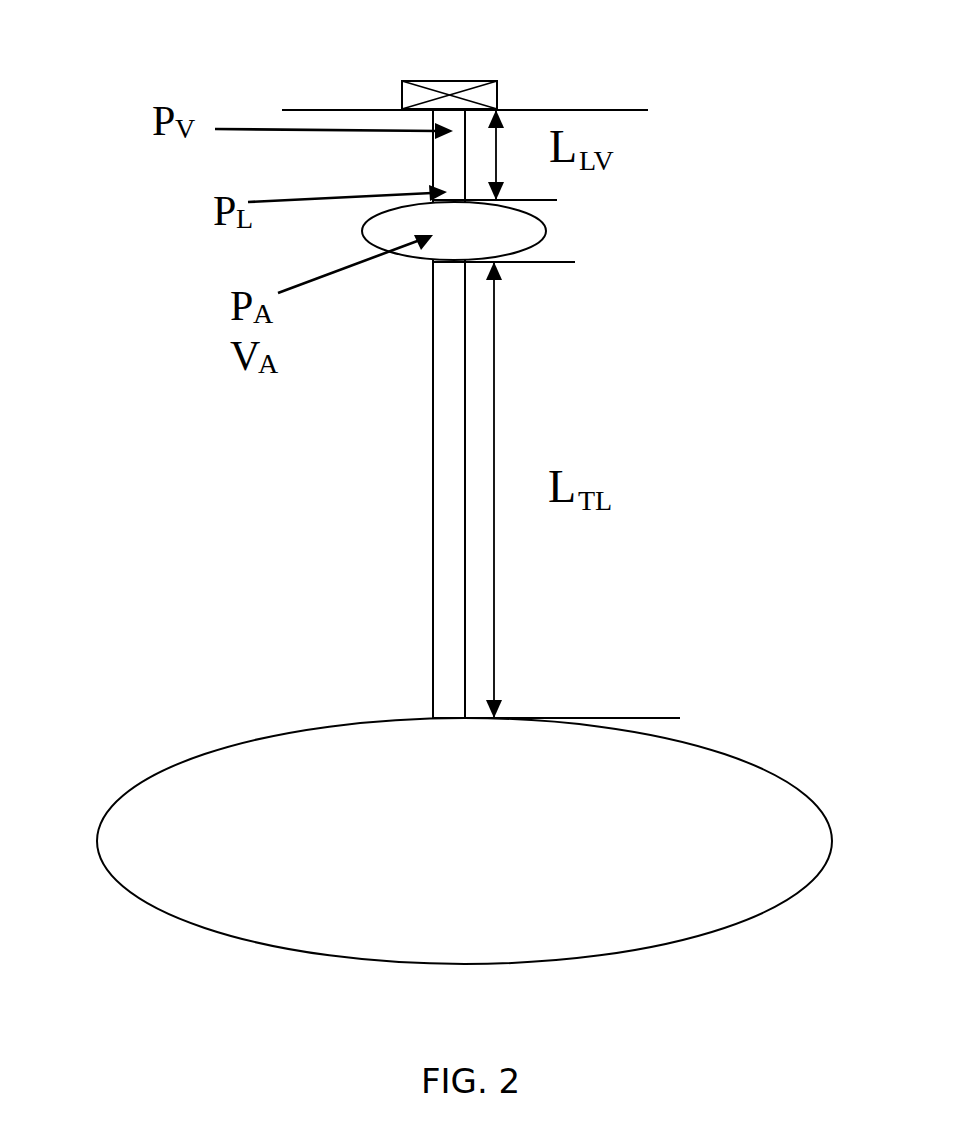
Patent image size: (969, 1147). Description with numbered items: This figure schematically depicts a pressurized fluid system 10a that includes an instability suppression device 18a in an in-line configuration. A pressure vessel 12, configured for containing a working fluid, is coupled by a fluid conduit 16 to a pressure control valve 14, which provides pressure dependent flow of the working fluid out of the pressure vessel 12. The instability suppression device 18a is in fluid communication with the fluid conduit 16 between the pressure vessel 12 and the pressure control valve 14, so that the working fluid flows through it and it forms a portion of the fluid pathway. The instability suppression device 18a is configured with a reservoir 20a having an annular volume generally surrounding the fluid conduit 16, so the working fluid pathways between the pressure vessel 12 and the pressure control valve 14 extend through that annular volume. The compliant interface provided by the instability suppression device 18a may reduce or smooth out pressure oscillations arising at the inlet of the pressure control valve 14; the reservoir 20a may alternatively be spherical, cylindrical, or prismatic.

The pressurized fluid system 10a is at (168, 59).
The pressure vessel 12 is at (97, 840).
The pressure control valve 14 is at (468, 79).
The fluid conduit 16 is at (434, 575).
The instability suppression device 18a is at (383, 284).
The reservoir 20a is at (547, 228).